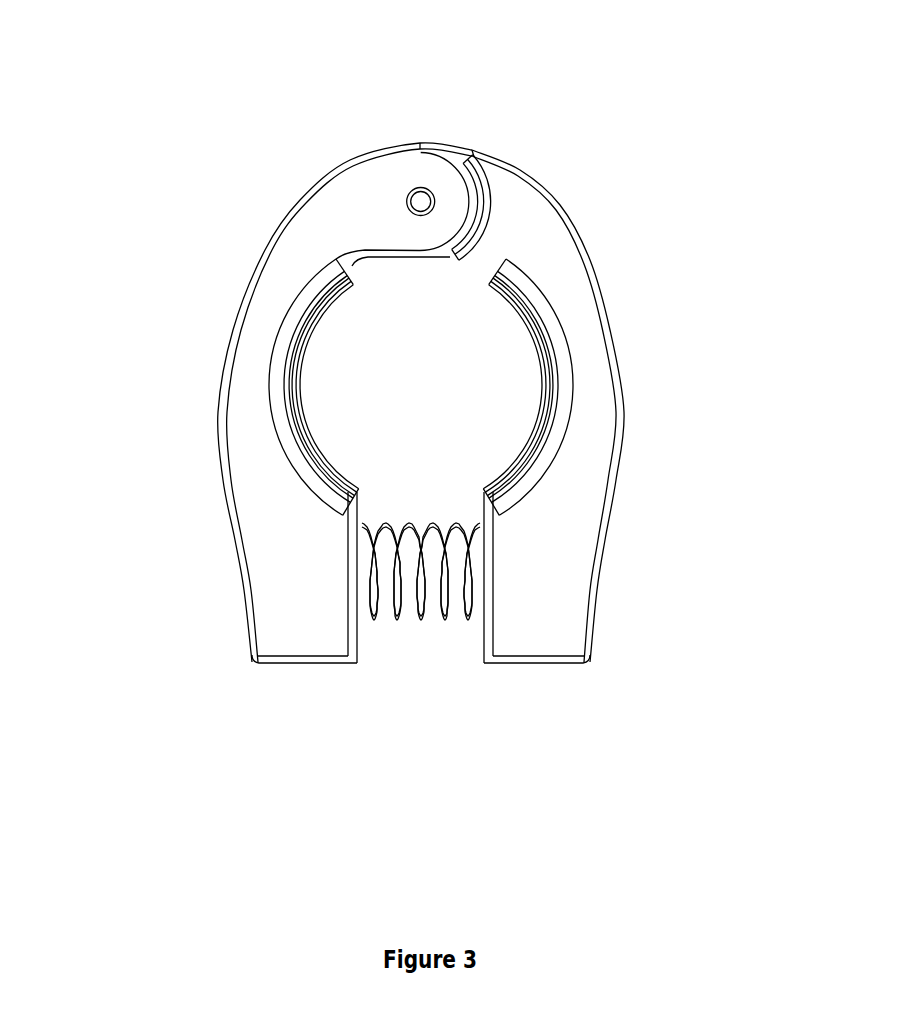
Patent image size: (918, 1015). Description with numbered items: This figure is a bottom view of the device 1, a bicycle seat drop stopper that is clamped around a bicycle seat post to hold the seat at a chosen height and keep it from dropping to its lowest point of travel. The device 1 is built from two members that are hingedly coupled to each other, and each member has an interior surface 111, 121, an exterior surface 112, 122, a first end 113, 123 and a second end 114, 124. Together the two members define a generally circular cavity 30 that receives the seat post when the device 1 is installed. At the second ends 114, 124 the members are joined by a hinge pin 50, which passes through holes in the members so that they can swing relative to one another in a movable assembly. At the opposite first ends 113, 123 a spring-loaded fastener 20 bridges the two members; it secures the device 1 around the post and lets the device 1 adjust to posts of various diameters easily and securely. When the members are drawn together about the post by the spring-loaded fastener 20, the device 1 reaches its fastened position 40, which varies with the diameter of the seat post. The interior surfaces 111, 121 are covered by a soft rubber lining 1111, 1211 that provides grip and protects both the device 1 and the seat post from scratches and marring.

The device 1 is at (620, 133).
The spring-loaded fastener 20 is at (421, 628).
The circular cavity 30 is at (390, 318).
The fastened position 40 is at (652, 185).
The hinge pin 50 is at (400, 193).
The interior surface 111 is at (352, 478).
The soft rubber lining 1111 is at (308, 410).
The exterior surface 112 is at (205, 412).
The first end 113 is at (293, 672).
The second end 114 is at (407, 130).
The interior surface 121 is at (487, 482).
The soft rubber lining 1211 is at (532, 375).
The exterior surface 122 is at (640, 393).
The first end 123 is at (538, 673).
The second end 124 is at (470, 148).